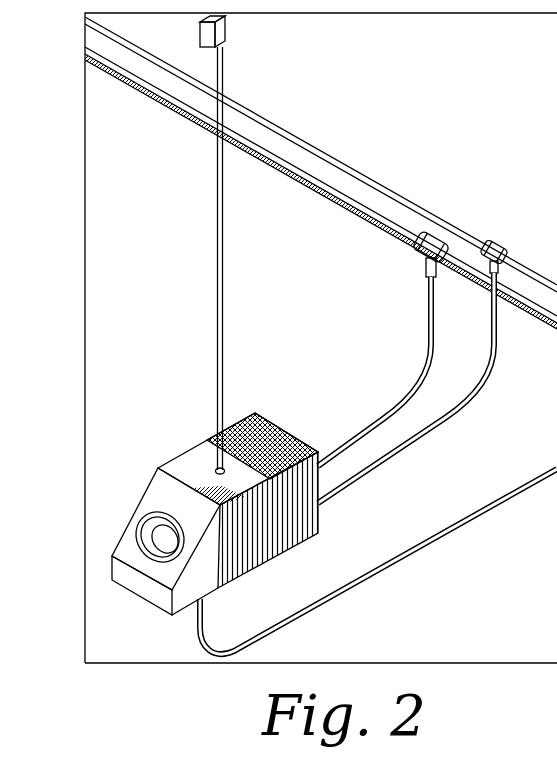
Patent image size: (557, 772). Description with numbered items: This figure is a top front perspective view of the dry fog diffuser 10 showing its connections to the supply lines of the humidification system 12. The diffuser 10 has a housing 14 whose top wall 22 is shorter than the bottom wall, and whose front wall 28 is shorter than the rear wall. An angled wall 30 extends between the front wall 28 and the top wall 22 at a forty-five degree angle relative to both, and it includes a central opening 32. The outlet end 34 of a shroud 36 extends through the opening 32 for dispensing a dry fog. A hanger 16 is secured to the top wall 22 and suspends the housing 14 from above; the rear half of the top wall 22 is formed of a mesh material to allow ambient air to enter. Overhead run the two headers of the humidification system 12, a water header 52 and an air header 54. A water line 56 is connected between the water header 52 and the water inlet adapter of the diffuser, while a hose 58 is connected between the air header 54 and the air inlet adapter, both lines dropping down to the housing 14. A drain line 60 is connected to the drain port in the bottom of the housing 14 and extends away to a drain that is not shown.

The diffuser 10 is at (191, 481).
The humidification system 12 is at (321, 173).
The housing 14 is at (285, 552).
The hanger 16 is at (217, 168).
The top wall 22 is at (187, 452).
The front wall 28 is at (140, 583).
The angled wall 30 is at (162, 493).
The central opening 32 is at (183, 538).
The outlet end 34 is at (140, 520).
The shroud 36 is at (135, 540).
The water header 52 is at (367, 178).
The air header 54 is at (325, 198).
The water line 56 is at (500, 323).
The hose 58 is at (428, 327).
The drain line 60 is at (463, 528).